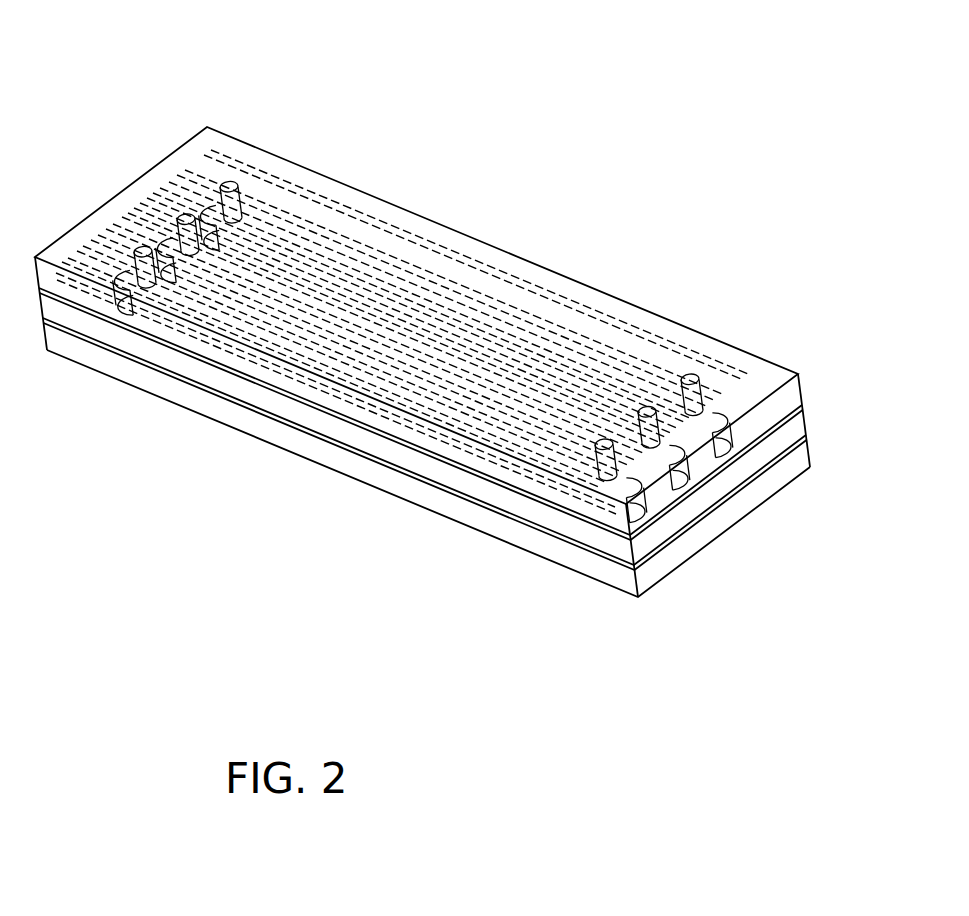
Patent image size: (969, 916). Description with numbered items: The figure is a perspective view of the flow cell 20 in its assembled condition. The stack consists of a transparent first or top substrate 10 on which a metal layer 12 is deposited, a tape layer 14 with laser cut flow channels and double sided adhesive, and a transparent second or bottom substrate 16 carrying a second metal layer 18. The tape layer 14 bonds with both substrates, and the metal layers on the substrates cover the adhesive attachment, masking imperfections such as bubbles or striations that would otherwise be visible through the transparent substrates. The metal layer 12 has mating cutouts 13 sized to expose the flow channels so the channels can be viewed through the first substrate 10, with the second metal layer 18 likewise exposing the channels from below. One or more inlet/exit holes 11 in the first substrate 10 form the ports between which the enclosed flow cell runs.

The flow cell 20 is at (410, 323).
The first substrate 10 is at (70, 283).
The metal layer 12 is at (88, 313).
The tape layer 14 is at (127, 337).
The second substrate 16 is at (292, 428).
The second metal layer 18 is at (380, 482).
The cutouts 13 is at (442, 297).
The inlet/exit holes 11 is at (222, 187).